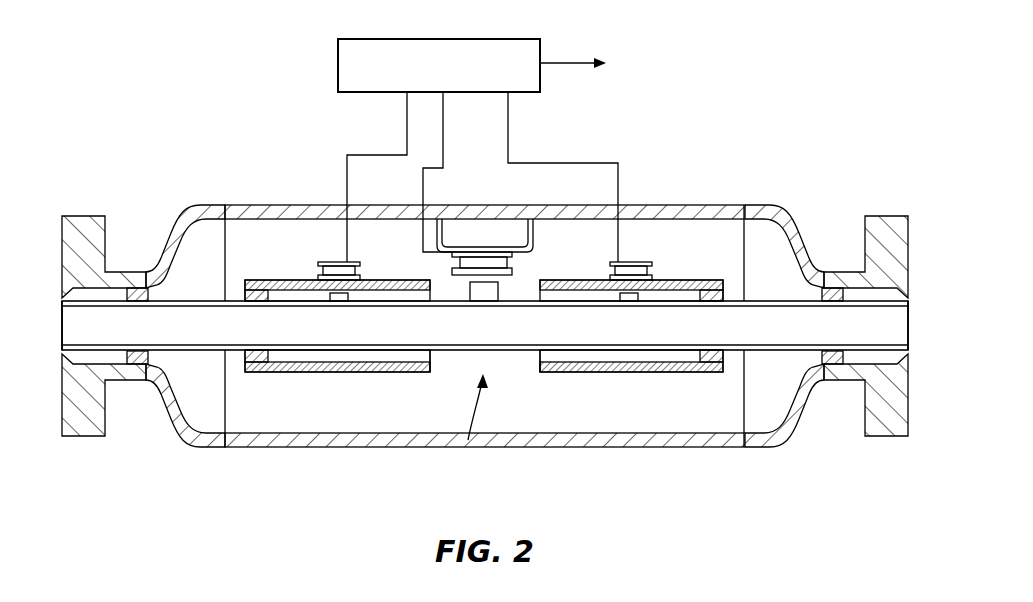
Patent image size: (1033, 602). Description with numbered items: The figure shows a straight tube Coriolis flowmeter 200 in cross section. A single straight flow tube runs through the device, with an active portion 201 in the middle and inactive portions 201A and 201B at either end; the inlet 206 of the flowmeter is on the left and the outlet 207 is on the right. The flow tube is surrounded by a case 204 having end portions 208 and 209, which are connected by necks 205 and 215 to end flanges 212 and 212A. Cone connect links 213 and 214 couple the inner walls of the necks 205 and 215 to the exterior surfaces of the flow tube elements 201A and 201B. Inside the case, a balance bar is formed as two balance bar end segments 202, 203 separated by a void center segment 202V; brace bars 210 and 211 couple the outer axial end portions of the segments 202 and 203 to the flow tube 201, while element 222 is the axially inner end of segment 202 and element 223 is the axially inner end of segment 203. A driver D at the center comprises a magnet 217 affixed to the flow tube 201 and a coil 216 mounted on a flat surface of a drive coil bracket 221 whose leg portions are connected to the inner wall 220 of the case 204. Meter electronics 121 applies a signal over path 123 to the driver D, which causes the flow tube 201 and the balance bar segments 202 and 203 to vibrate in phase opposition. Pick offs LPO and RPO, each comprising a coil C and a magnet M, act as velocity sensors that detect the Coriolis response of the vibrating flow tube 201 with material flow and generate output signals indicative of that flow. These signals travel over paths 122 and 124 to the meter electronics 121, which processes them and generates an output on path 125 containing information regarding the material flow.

The straight tube Coriolis flowmeter 200 is at (188, 86).
The meter electronics 121 is at (338, 48).
The path 122 is at (407, 118).
The path 123 is at (443, 117).
The path 124 is at (508, 120).
The path 125 is at (578, 60).
The active portion of flow tube 201 is at (457, 334).
The inactive portion of flow tube 201A is at (183, 334).
The inactive portion of flow tube 201B is at (845, 334).
The balance bar end segment 202 is at (317, 347).
The void center segment 202V is at (464, 431).
The balance bar end segment 203 is at (642, 330).
The case 204 is at (702, 205).
The neck 205 is at (137, 381).
The inlet 206 is at (134, 303).
The outlet 207 is at (839, 317).
The end portion of case 208 is at (170, 205).
The end portion of case 209 is at (822, 216).
The brace bar 210 is at (245, 357).
The brace bar 211 is at (723, 291).
The end flange 212 is at (101, 208).
The end flange 212A is at (880, 215).
The cone connect link 213 is at (150, 292).
The cone connect link 214 is at (823, 355).
The neck 215 is at (840, 379).
The coil 216 is at (489, 254).
The magnet 217 is at (490, 292).
The inner wall of case 220 is at (357, 430).
The drive coil bracket 221 is at (445, 230).
The axially inner end of balance bar segment 222 is at (440, 372).
The axially inner end of balance bar segment 223 is at (540, 372).
The left pick off LPO is at (332, 262).
The right pick off RPO is at (632, 262).
The coil C is at (362, 267).
The magnet M is at (335, 296).
The driver D is at (458, 271).